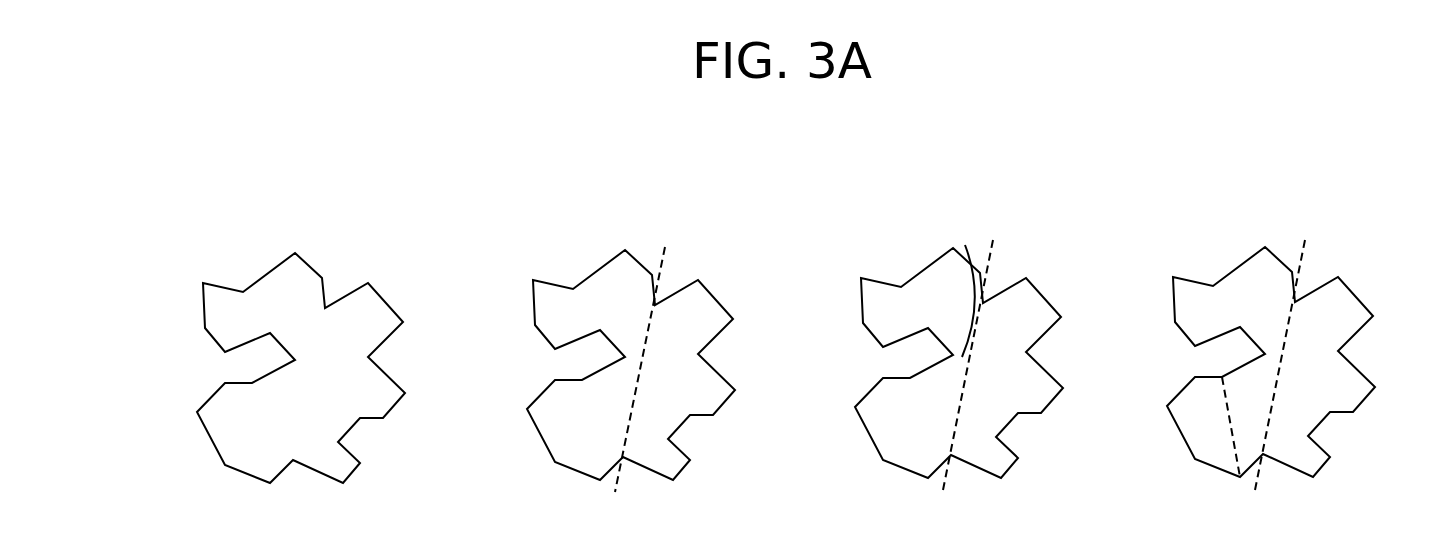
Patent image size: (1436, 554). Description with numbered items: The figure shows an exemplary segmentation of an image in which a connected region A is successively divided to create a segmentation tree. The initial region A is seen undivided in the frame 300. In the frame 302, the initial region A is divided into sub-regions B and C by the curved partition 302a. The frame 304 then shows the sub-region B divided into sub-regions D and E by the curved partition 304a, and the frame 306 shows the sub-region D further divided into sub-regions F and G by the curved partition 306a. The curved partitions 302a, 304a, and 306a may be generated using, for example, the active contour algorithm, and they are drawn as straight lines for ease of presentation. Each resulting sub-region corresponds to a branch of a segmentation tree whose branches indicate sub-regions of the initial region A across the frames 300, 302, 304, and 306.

The frame 300 is at (280, 262).
The frame 302 is at (606, 259).
The curved partition 302a is at (665, 247).
The frame 304 is at (937, 257).
The curved partition 304a is at (965, 245).
The frame 306 is at (1247, 248).
The curved partition 306a is at (1222, 377).